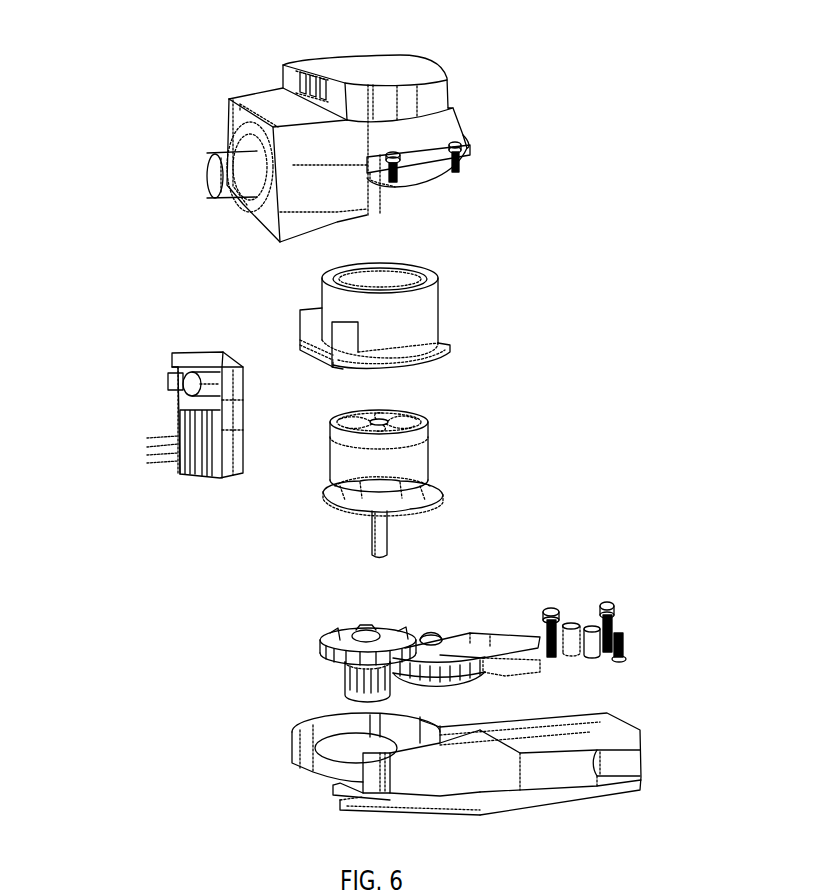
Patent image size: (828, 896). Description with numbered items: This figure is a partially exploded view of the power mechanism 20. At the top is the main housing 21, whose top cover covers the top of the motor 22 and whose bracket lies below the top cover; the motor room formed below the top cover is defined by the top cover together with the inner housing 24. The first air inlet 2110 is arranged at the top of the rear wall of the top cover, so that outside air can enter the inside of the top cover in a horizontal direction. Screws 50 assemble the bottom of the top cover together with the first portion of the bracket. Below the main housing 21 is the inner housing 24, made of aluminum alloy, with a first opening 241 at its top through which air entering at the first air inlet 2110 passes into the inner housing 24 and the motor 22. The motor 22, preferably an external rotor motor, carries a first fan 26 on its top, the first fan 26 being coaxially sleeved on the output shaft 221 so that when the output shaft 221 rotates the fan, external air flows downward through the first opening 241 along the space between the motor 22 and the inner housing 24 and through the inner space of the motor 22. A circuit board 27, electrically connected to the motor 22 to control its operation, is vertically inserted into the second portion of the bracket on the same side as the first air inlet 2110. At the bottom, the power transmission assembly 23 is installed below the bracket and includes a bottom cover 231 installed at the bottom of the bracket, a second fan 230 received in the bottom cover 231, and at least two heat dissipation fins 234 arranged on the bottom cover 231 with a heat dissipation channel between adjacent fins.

The power mechanism 20 is at (113, 37).
The main housing 21 is at (420, 140).
The first air inlet 2110 is at (308, 85).
The screws 50 is at (397, 178).
The inner housing 24 is at (417, 320).
The first opening 241 is at (383, 282).
The motor 22 is at (412, 462).
The first fan 26 is at (420, 420).
The output shaft 221 is at (382, 533).
The circuit board 27 is at (190, 470).
The power transmission assembly 23 is at (213, 628).
The second fan 230 is at (330, 628).
The bottom cover 231 is at (327, 778).
The heat dissipation fins 234 is at (550, 737).